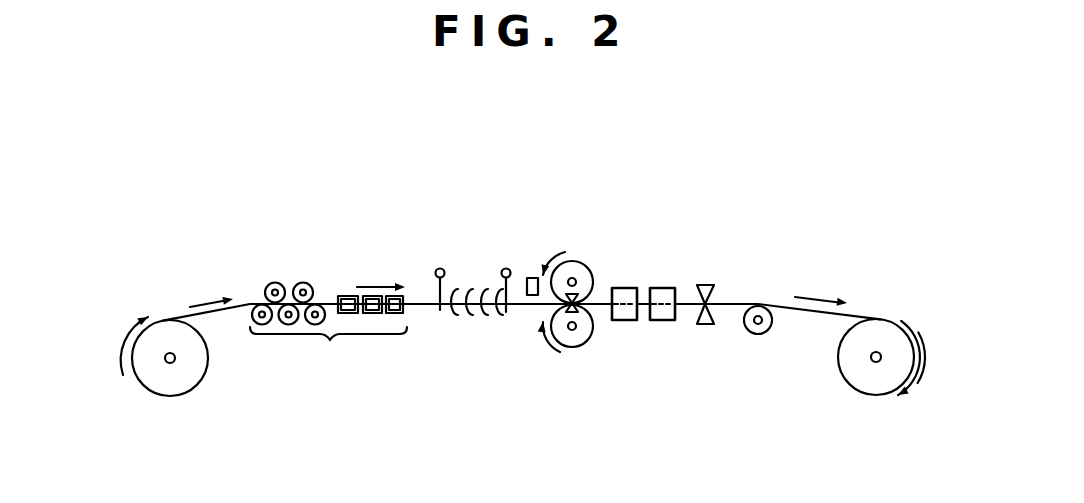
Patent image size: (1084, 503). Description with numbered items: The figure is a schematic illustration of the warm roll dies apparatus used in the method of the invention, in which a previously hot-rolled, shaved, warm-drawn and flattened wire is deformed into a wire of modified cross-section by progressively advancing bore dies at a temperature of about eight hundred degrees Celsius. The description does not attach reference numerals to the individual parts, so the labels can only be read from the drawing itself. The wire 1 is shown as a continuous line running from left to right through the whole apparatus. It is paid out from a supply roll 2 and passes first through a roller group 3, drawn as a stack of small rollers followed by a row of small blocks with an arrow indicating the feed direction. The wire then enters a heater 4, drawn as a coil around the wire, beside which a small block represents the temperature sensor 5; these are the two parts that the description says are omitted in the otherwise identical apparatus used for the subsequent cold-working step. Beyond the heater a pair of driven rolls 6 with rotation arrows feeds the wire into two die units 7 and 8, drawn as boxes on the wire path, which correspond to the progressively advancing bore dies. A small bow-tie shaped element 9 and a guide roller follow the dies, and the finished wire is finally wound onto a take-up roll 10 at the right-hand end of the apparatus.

The web 1 is at (326, 308).
The supply roll 2 is at (154, 395).
The pretreatment roller unit 3 is at (328, 344).
The heating coil 4 is at (494, 325).
The sensor block 5 is at (530, 277).
The pinch rollers 6 is at (567, 348).
The processing unit 7 is at (626, 288).
The processing unit 8 is at (660, 321).
The cutter 9 is at (703, 284).
The take-up roll 10 is at (852, 382).